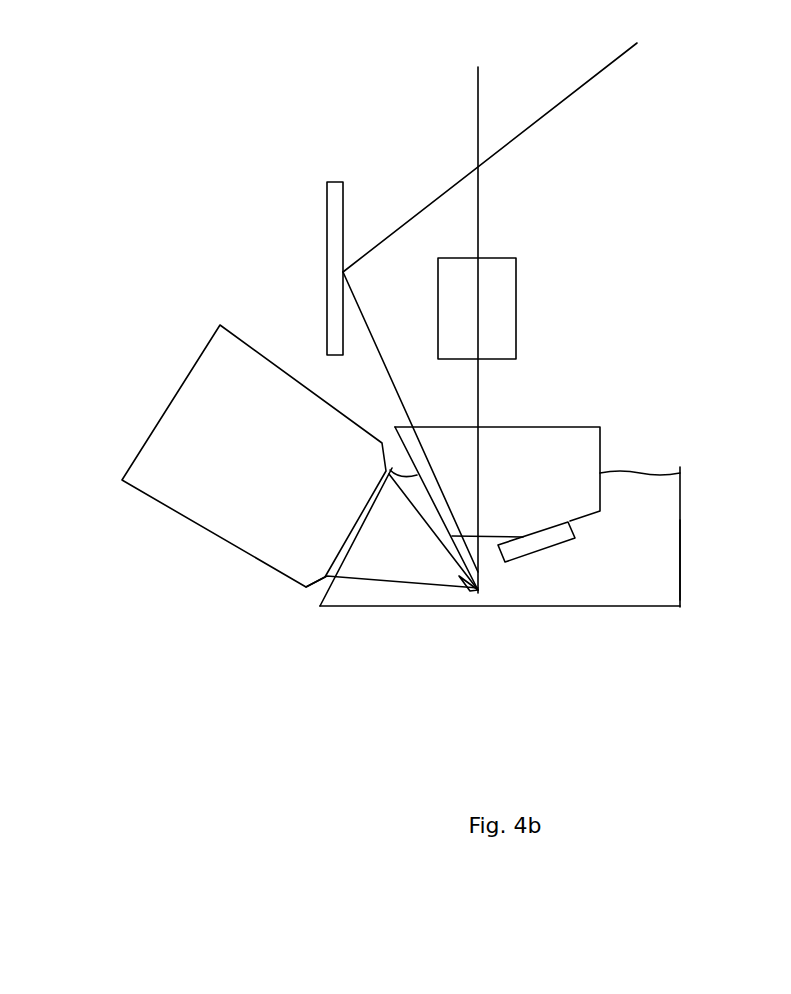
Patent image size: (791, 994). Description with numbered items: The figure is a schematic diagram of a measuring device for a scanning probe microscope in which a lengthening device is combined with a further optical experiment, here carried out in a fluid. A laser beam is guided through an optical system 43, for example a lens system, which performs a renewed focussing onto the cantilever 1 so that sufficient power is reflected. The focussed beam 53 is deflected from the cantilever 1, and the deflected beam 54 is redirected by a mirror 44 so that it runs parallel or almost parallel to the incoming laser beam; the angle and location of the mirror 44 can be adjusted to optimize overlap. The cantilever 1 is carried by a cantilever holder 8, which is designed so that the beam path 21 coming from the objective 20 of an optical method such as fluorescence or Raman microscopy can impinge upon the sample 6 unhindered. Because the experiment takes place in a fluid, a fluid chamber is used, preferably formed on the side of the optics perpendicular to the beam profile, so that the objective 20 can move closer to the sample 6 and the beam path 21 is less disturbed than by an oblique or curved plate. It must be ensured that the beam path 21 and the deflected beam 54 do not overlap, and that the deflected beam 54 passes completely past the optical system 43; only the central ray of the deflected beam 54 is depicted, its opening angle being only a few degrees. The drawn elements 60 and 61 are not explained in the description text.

The cantilever 1 is at (485, 572).
The sample 6 is at (432, 603).
The cantilever holder 8 is at (587, 465).
The objective 20 is at (260, 537).
The beam path 21 is at (413, 568).
The optical system 43 is at (503, 280).
The mirror 44 is at (332, 340).
The beam 53 is at (480, 368).
The deflected beam 54 is at (453, 512).
The housing 60 is at (652, 520).
The housing wall 61 is at (680, 565).